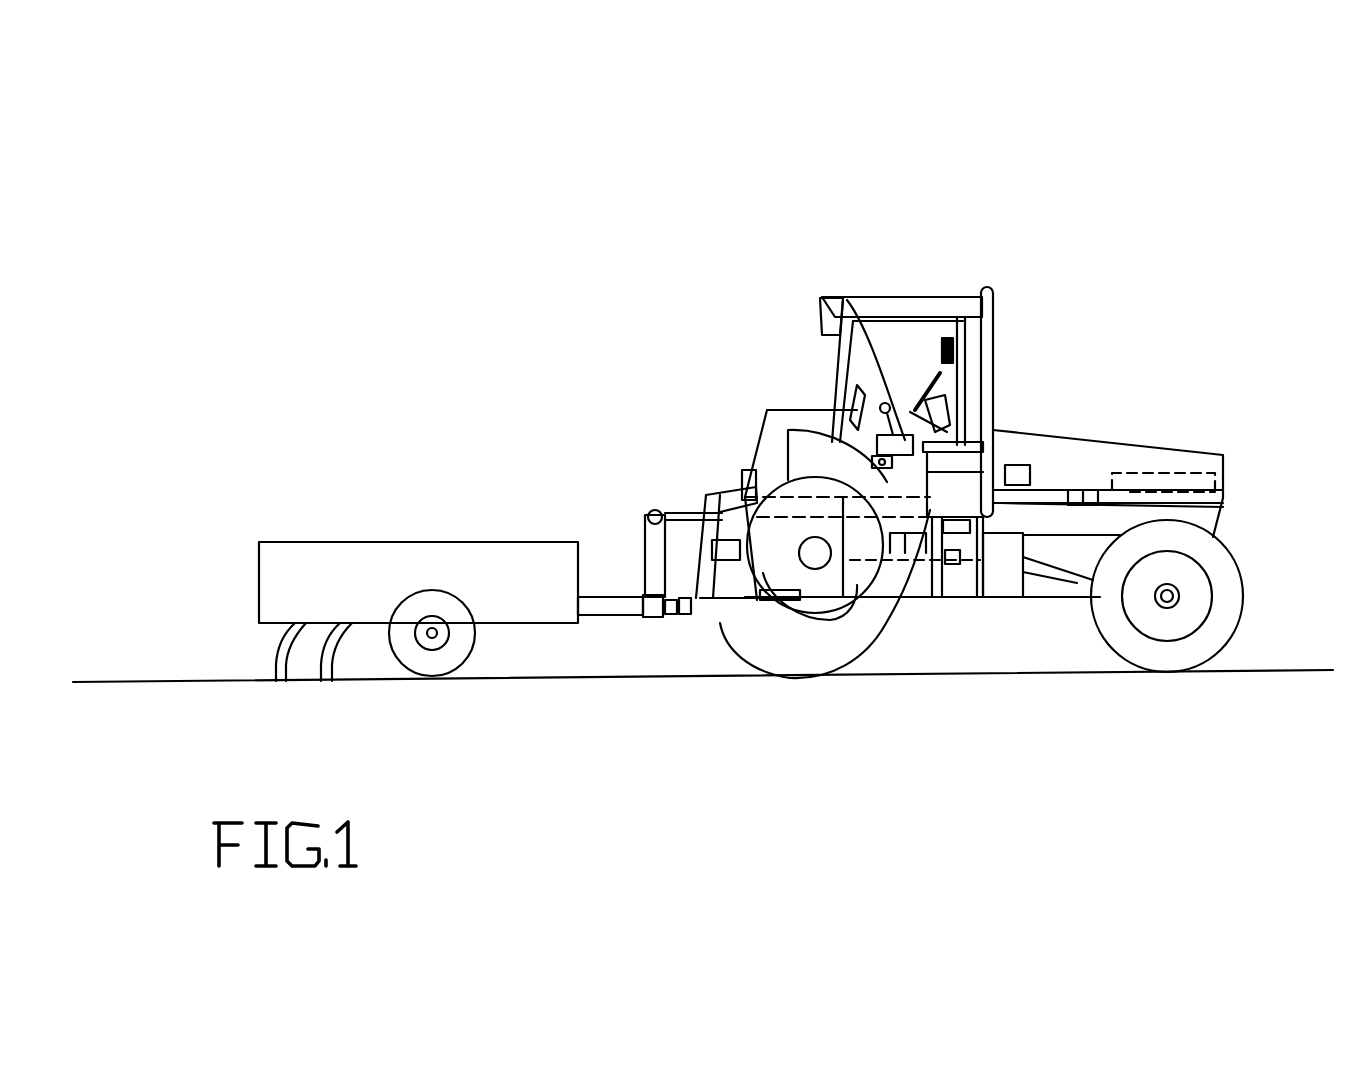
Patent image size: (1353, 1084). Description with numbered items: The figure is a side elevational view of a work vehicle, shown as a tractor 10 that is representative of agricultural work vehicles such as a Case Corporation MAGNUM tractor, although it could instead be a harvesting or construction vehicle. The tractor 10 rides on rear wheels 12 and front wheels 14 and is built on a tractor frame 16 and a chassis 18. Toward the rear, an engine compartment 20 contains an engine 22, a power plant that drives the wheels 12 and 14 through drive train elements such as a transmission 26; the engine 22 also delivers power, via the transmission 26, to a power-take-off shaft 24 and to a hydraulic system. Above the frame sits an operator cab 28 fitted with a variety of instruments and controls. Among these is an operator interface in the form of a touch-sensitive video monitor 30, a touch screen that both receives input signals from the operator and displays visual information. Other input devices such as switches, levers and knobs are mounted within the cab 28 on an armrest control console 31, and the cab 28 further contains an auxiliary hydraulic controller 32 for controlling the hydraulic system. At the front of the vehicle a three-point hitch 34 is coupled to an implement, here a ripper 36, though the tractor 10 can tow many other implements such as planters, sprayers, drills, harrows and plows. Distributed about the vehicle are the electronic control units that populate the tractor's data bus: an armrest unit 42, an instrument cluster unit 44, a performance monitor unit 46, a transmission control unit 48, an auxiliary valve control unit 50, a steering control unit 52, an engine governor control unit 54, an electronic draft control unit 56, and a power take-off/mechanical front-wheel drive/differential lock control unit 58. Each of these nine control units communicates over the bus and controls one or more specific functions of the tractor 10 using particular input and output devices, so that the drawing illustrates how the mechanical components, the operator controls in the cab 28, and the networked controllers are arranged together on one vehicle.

The tractor 10 is at (1122, 278).
The rear wheels 12 is at (803, 650).
The front wheels 14 is at (1185, 657).
The tractor frame 16 is at (950, 590).
The chassis 18 is at (1013, 590).
The engine compartment 20 is at (1178, 460).
The engine 22 is at (1198, 478).
The power-take-off shaft 24 is at (713, 593).
The transmission 26 is at (972, 593).
The operator cab 28 is at (845, 250).
The touch-sensitive video monitor 30 is at (940, 338).
The armrest control console 31 is at (860, 430).
The auxiliary hydraulic controller 32 is at (957, 390).
The three-point hitch 34 is at (670, 485).
The ripper 36 is at (328, 508).
The armrest unit 42 is at (862, 447).
The instrument cluster unit 44 is at (992, 290).
The performance monitor unit 46 is at (1005, 478).
The transmission control unit 48 is at (900, 557).
The auxiliary valve control unit 50 is at (847, 300).
The steering control unit 52 is at (993, 412).
The engine governor control unit 54 is at (1083, 500).
The electronic draft control unit 56 is at (697, 557).
The power take-off/mechanical front-wheel drive/differential lock control unit 58 is at (710, 510).